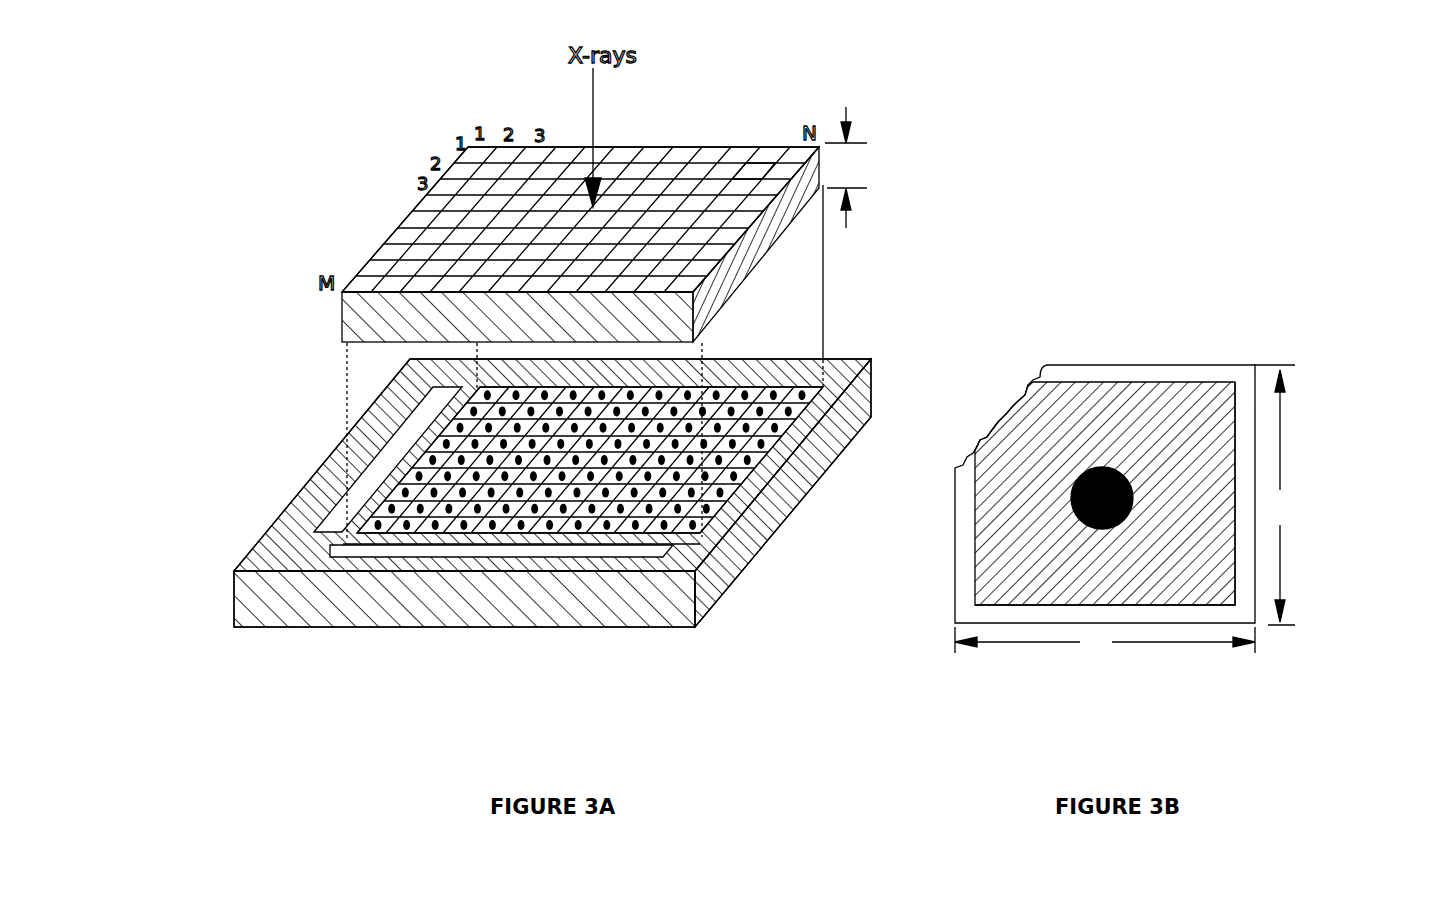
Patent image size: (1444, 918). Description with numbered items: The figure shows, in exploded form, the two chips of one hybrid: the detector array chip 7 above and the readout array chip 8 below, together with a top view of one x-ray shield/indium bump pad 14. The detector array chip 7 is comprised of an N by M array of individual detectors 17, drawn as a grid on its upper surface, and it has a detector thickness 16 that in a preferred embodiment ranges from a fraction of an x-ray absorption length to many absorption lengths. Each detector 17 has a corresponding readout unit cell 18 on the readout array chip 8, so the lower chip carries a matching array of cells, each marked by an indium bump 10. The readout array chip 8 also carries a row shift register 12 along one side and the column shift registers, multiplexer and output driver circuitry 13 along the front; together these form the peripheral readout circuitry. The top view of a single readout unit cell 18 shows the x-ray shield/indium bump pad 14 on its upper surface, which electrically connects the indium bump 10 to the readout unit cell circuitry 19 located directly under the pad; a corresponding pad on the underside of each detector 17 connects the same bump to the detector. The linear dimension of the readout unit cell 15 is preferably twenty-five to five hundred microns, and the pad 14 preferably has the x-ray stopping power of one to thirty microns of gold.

In FIG. 3A, the detector array chip 7 is at (742, 282).
In FIG. 3A, the readout array chip 8 is at (230, 600).
In FIG. 3A, the indium bump 10 is at (783, 412).
In FIG. 3B, the indium bump 10 is at (1120, 472).
In FIG. 3A, the row shift register 12 is at (372, 475).
In FIG. 3A, the column shift registers, multiplexer and output driver circuitry 13 is at (417, 552).
In FIG. 3B, the x-ray shield/indium bump pad 14 is at (1217, 607).
In FIG. 3B, the linear dimension of the readout unit cell 15 is at (1126, 510).
In FIG. 3A, the detector thickness 16 is at (846, 167).
In FIG. 3A, the individual detector 17 is at (760, 168).
In FIG. 3A, the readout unit cell 18 is at (803, 367).
In FIG. 3B, the readout unit cell 18 is at (1223, 365).
In FIG. 3B, the readout unit cell circuitry 19 is at (1002, 527).